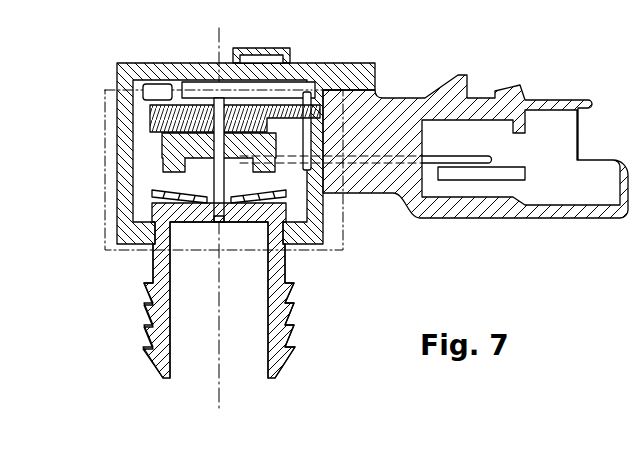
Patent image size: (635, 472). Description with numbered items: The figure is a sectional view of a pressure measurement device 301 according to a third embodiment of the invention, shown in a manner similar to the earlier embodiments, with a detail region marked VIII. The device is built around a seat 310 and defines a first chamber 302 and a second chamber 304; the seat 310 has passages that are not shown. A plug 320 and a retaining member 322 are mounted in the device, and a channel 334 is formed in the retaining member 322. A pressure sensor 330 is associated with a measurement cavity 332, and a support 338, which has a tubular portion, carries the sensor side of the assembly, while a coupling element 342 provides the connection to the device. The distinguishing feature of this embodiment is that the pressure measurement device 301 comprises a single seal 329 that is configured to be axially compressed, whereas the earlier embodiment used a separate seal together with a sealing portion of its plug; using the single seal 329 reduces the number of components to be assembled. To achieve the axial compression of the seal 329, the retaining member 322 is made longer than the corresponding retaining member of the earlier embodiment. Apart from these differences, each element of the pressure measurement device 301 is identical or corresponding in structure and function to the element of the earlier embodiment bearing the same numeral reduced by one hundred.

The pressure measurement device 301 is at (111, 380).
The first chamber 302 is at (241, 361).
The second chamber 304 is at (135, 173).
The seat 310 is at (262, 210).
The plug 320 is at (152, 191).
The retaining member 322 is at (214, 224).
The seal 329 is at (262, 148).
The pressure sensor 330 is at (250, 110).
The measurement cavity 332 is at (206, 141).
The channel 334 is at (223, 233).
The support 338 is at (393, 127).
The coupling element 342 is at (162, 314).
The detail view region VIII is at (105, 92).